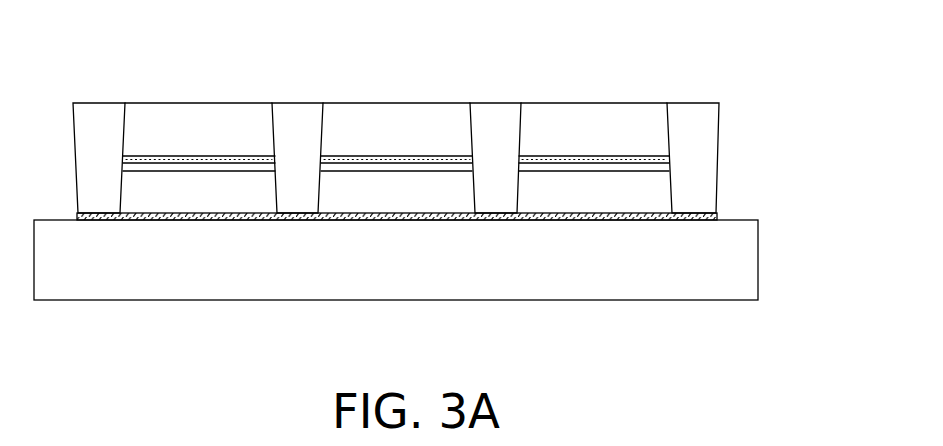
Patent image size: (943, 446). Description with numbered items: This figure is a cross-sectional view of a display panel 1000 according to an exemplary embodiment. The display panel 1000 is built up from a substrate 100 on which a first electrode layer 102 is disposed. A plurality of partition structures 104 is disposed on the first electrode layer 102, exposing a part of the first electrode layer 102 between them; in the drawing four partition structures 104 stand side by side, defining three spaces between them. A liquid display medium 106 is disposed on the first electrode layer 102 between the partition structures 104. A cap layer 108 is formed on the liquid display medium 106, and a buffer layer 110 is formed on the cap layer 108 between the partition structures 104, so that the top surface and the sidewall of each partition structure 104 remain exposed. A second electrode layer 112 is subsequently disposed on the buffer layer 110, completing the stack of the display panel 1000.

The substrate 100 is at (730, 280).
The first electrode layer 102 is at (708, 216).
The partition structure 104 is at (700, 130).
The liquid display medium 106 is at (658, 195).
The cap layer 108 is at (665, 167).
The buffer layer 110 is at (636, 157).
The second electrode layer 112 is at (575, 120).
The display panel 1000 is at (434, 187).